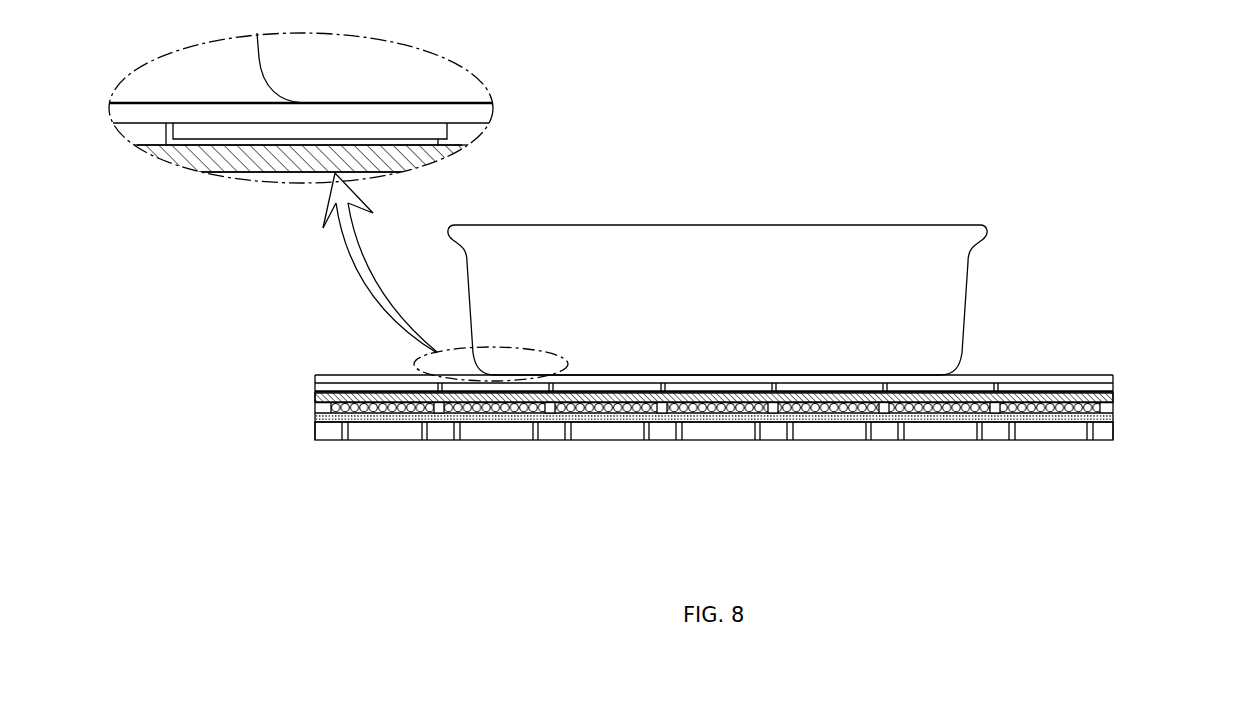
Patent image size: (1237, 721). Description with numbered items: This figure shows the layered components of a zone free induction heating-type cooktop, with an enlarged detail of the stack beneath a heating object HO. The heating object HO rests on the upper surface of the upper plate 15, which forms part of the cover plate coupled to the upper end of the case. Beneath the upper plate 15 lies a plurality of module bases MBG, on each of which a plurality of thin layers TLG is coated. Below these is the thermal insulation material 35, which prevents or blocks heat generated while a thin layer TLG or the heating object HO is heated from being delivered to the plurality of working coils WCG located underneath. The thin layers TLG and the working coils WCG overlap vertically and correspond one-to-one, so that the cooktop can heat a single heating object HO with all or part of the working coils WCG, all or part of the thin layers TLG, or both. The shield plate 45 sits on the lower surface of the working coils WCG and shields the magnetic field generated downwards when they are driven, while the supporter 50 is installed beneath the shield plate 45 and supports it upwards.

The heating object HO is at (851, 245).
The upper plate 15 is at (1112, 382).
The module bases MBG is at (322, 376).
The thin layers TLG is at (318, 389).
The thermal insulation material 35 is at (1113, 400).
The working coils WCG is at (1122, 412).
The shield plate 45 is at (1115, 425).
The supporter 50 is at (1089, 441).